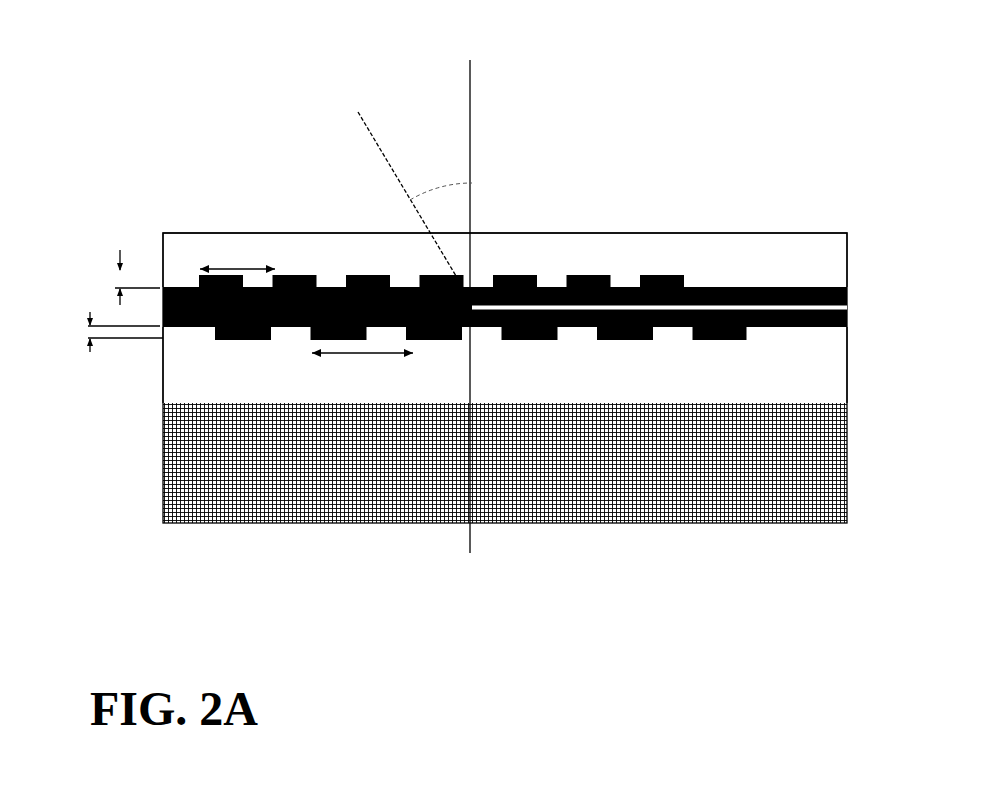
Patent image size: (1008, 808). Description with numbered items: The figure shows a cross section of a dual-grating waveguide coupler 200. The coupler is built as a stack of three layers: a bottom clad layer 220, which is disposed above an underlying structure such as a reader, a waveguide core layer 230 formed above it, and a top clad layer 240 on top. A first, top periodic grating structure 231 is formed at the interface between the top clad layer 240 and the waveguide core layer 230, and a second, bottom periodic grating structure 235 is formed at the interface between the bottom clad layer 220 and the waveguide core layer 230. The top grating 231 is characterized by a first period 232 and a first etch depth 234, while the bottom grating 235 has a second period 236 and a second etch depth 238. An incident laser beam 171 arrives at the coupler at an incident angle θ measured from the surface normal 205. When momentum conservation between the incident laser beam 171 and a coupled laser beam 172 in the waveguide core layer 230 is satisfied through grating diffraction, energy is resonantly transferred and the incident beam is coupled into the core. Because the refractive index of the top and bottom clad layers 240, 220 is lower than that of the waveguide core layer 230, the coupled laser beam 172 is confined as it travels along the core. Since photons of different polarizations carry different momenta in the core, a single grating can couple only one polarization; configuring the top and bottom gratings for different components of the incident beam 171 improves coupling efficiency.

The dual-grating waveguide coupler 200 is at (478, 599).
The surface normal 205 is at (470, 90).
The incident laser beam 171 is at (403, 187).
The coupled laser beam 172 is at (733, 307).
The bottom clad layer 220 is at (830, 380).
The waveguide core layer 230 is at (903, 316).
The top periodic grating structure 231 is at (508, 285).
The first period 232 is at (244, 258).
The first etch depth 234 is at (107, 277).
The bottom periodic grating structure 235 is at (630, 338).
The second period 236 is at (365, 369).
The second etch depth 238 is at (91, 332).
The top clad layer 240 is at (830, 265).